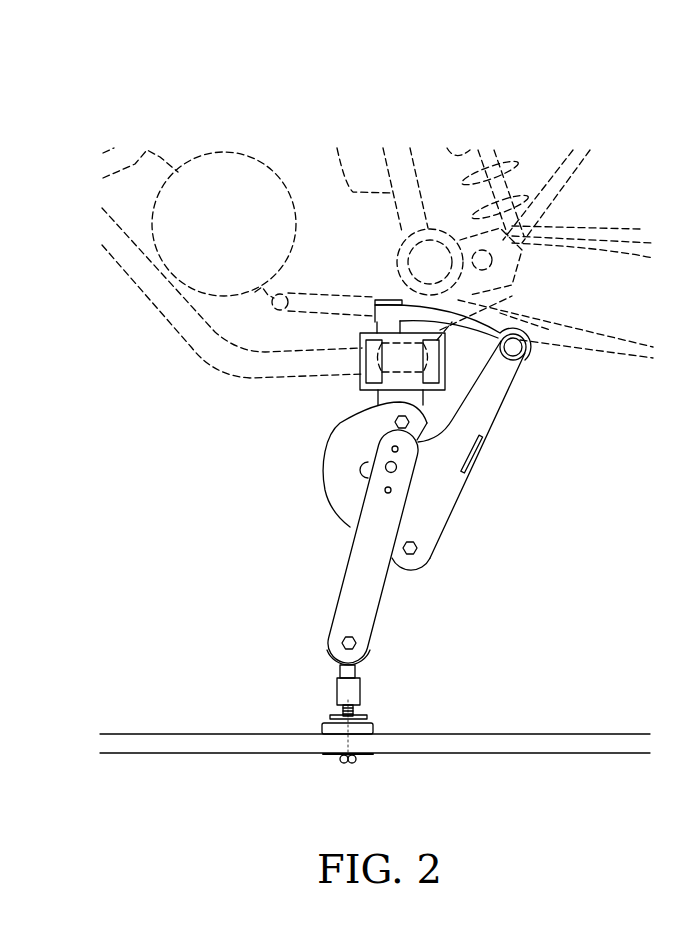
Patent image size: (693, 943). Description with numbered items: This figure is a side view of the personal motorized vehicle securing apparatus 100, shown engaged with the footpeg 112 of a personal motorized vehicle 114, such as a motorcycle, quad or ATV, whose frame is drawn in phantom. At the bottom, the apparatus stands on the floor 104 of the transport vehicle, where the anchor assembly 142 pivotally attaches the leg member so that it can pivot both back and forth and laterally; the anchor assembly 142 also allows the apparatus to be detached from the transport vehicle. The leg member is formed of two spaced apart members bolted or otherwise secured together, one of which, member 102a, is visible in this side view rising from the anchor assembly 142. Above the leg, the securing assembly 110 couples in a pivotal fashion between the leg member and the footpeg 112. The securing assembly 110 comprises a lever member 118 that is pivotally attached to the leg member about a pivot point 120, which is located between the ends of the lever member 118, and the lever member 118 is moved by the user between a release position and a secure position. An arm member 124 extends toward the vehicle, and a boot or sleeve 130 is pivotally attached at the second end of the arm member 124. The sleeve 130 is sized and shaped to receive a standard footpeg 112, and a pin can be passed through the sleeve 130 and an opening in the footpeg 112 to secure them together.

The personal motorized vehicle securing apparatus 100 is at (280, 555).
The spaced apart member of leg member 102a is at (388, 546).
The floor 104 is at (197, 742).
The securing assembly 110 is at (495, 464).
The footpeg 112 is at (495, 316).
The personal motorized vehicle 114 is at (420, 172).
The lever member 118 is at (431, 550).
The pivot point 120 is at (395, 470).
The arm member 124 is at (325, 445).
The sleeve 130 is at (443, 383).
The anchor assembly 142 is at (395, 686).